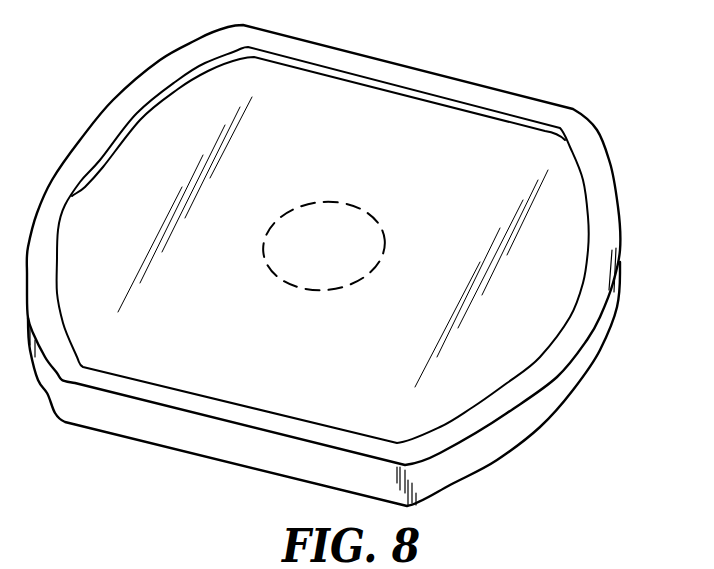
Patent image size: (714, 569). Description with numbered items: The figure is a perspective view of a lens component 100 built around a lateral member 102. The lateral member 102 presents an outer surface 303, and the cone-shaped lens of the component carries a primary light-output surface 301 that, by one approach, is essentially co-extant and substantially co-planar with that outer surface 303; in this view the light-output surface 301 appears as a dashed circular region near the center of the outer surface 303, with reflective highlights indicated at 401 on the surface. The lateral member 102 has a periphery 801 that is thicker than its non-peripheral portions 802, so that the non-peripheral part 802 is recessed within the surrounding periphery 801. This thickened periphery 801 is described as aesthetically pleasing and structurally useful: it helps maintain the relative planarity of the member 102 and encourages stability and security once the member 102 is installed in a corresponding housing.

The lens component 100 is at (209, 503).
The lateral member 102 is at (398, 63).
The primary light-output surface 301 is at (341, 258).
The outer surface 303 is at (565, 237).
The display surface 401 is at (148, 133).
The periphery 801 is at (522, 105).
The non-peripheral portions 802 is at (423, 123).